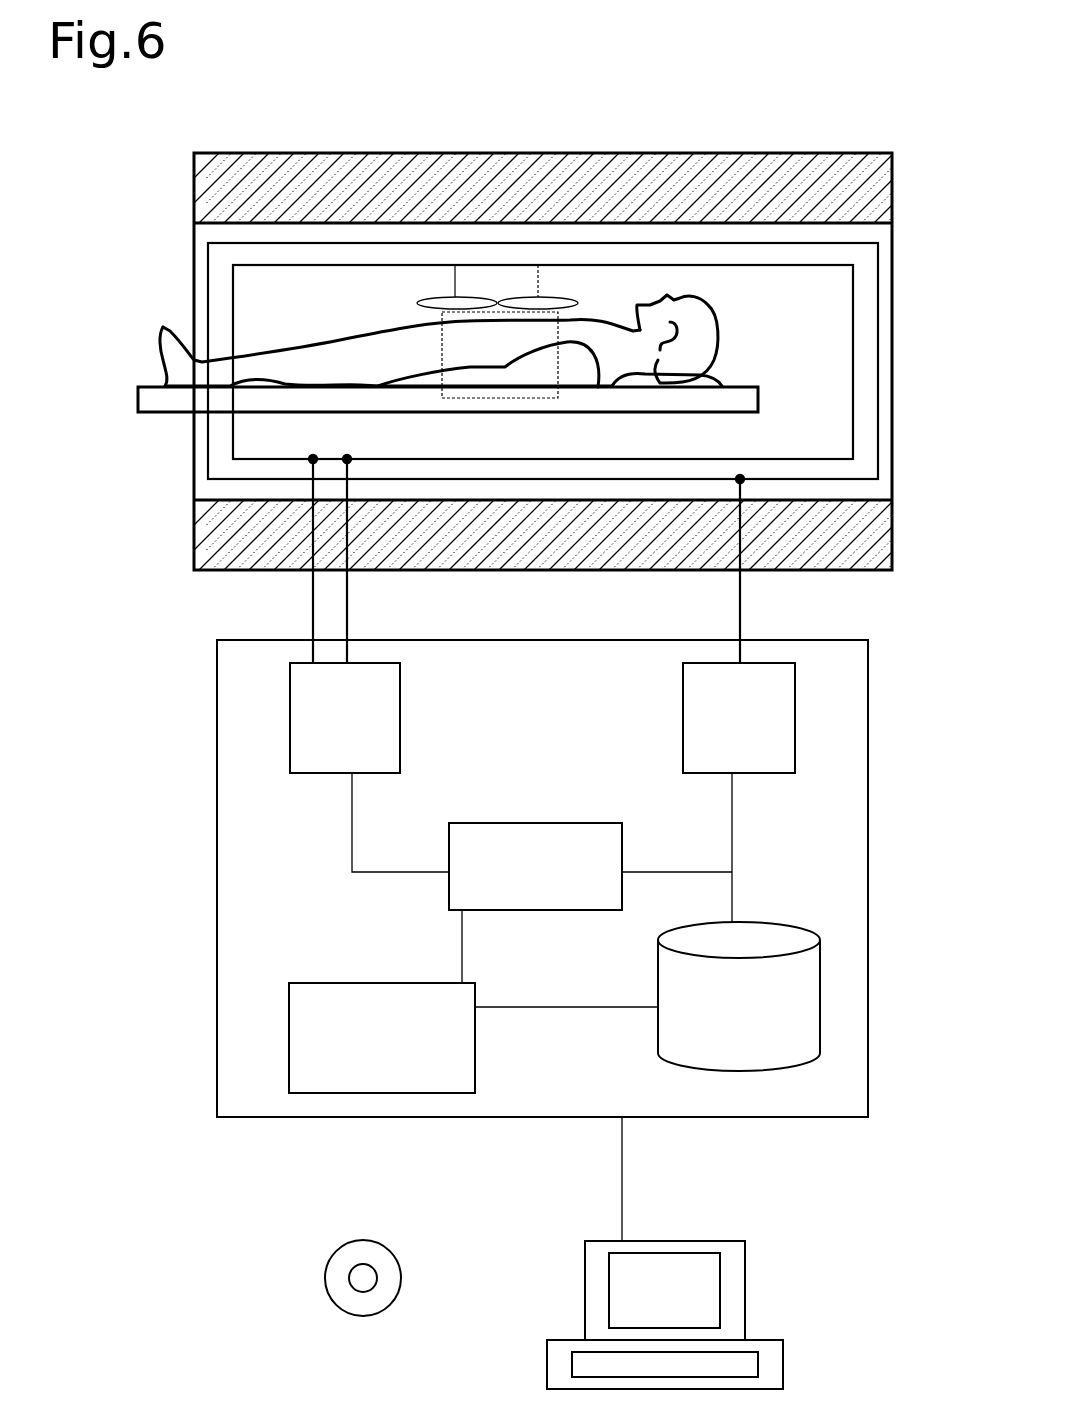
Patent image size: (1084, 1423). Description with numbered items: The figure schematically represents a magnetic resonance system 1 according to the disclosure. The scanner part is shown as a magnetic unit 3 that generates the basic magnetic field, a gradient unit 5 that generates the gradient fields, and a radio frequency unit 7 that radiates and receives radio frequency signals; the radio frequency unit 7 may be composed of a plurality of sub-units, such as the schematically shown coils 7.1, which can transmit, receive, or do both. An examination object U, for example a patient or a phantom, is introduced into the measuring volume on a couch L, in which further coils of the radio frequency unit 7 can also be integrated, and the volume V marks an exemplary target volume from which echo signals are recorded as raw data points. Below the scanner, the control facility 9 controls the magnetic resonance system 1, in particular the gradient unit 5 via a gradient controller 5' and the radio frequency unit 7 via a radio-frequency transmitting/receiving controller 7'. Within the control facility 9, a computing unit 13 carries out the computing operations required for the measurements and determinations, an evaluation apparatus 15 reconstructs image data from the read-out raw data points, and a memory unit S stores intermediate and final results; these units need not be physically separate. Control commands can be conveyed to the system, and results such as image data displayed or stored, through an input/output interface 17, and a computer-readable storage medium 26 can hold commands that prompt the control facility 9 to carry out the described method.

The magnetic resonance system 1 is at (785, 101).
The magnetic unit 3 is at (543, 153).
The gradient unit 5 is at (579, 453).
The radio frequency unit 7 is at (591, 464).
The coils 7.1 is at (446, 302).
The couch L is at (138, 399).
The examination object U is at (163, 325).
The volume V is at (493, 400).
The control facility 9 is at (650, 688).
The radio-frequency transmitting/receiving controller 7' is at (368, 718).
The gradient controller 5' is at (762, 718).
The computing unit 13 is at (598, 796).
The evaluation apparatus 15 is at (318, 983).
The memory unit S is at (796, 903).
The input/output interface 17 is at (746, 1282).
The computer-readable storage medium 26 is at (326, 1275).